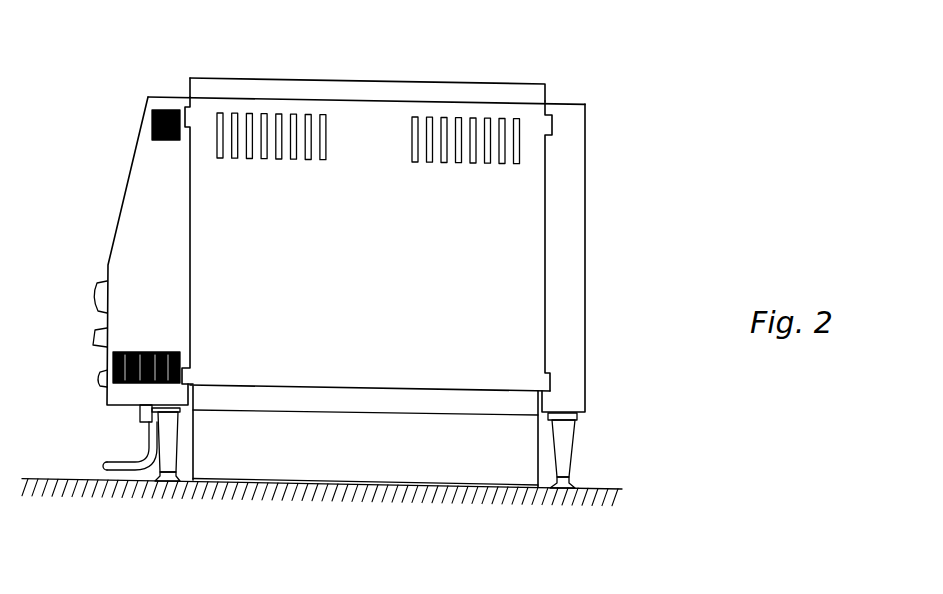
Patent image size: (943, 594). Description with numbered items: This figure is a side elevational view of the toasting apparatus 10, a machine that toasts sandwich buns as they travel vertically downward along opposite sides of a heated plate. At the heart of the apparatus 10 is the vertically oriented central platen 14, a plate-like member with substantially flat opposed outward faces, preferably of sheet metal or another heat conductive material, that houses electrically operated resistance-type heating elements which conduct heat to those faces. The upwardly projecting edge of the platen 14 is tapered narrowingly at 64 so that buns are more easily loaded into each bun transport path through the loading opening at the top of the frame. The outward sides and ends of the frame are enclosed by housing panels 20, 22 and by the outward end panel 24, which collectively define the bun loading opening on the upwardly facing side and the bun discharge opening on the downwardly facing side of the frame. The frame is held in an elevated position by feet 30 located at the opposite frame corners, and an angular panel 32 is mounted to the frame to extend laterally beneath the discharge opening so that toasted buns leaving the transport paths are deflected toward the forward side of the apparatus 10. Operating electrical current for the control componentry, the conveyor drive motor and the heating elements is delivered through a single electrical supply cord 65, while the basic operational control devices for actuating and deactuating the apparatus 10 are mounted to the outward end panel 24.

The toasting apparatus 10 is at (628, 220).
The central platen 14 is at (203, 90).
The housing panel 20 is at (585, 295).
The housing panel 22 is at (383, 281).
The outward end panel 24 is at (130, 173).
The feet 30 is at (570, 430).
The angular panel 32 is at (510, 455).
The tapered edge of platen 64 is at (410, 80).
The electrical supply cord 65 is at (128, 455).